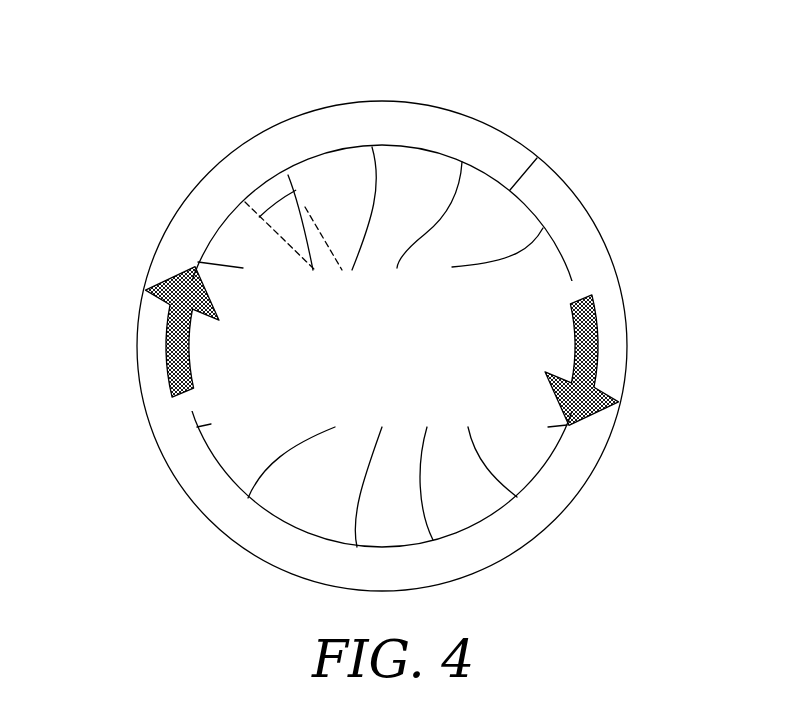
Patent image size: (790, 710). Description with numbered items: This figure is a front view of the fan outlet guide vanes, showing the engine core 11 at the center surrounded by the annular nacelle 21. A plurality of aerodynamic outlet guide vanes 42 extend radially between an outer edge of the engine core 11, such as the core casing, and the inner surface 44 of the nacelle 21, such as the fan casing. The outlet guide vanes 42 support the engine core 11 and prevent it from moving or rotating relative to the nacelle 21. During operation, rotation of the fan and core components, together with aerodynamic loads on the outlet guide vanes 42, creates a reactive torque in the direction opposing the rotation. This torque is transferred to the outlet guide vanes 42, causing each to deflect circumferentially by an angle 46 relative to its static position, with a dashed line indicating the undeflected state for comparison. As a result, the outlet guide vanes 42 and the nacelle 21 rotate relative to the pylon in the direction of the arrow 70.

The engine core 11 is at (417, 358).
The nacelle 21 is at (480, 138).
The outlet guide vane 42 is at (567, 265).
The inner surface 44 is at (537, 158).
The angle 46 is at (275, 197).
The arrow 70 is at (172, 324).